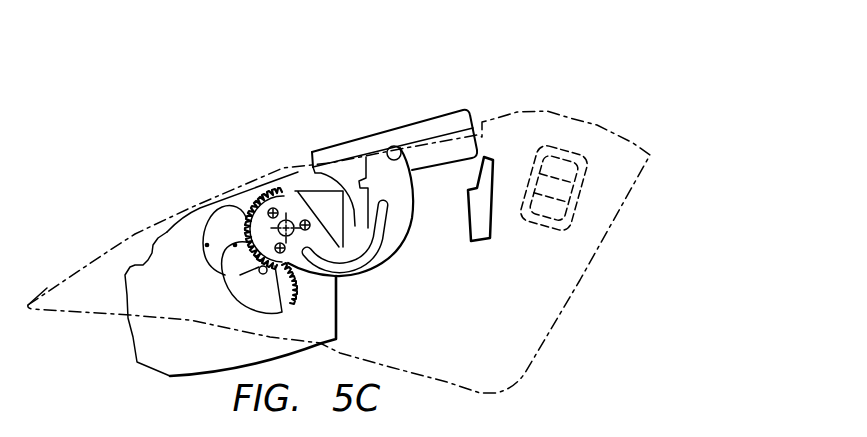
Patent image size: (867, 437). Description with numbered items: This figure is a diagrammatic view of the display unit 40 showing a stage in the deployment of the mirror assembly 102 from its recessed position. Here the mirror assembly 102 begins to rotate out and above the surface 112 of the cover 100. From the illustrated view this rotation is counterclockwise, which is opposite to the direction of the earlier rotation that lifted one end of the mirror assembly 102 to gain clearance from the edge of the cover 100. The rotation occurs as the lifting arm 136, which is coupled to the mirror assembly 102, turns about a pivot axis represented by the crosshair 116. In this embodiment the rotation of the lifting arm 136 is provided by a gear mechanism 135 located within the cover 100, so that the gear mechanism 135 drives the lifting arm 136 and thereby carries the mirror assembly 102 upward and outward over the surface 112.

The display unit 40 is at (261, 81).
The cover 100 is at (163, 221).
The mirror assembly 102 is at (382, 120).
The surface 112 is at (227, 188).
The crosshair 116 is at (290, 183).
The gear mechanism 135 is at (300, 276).
The lifting arm 136 is at (402, 247).